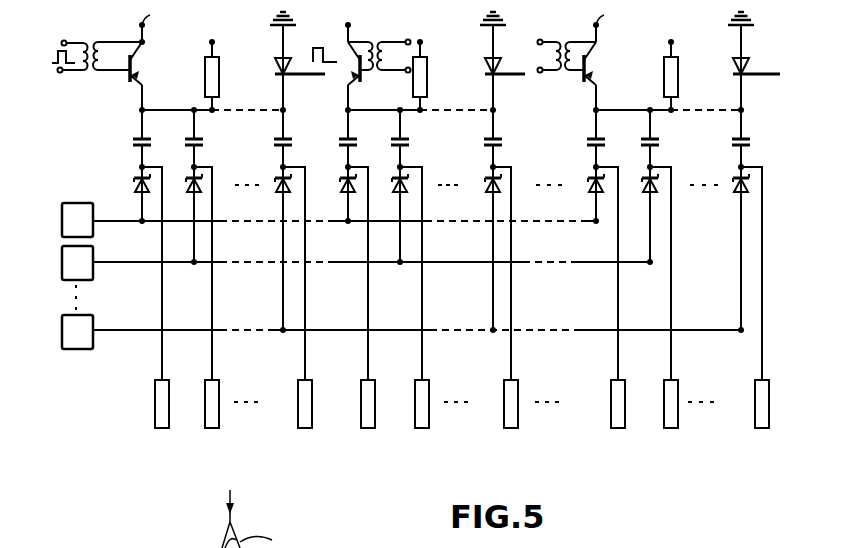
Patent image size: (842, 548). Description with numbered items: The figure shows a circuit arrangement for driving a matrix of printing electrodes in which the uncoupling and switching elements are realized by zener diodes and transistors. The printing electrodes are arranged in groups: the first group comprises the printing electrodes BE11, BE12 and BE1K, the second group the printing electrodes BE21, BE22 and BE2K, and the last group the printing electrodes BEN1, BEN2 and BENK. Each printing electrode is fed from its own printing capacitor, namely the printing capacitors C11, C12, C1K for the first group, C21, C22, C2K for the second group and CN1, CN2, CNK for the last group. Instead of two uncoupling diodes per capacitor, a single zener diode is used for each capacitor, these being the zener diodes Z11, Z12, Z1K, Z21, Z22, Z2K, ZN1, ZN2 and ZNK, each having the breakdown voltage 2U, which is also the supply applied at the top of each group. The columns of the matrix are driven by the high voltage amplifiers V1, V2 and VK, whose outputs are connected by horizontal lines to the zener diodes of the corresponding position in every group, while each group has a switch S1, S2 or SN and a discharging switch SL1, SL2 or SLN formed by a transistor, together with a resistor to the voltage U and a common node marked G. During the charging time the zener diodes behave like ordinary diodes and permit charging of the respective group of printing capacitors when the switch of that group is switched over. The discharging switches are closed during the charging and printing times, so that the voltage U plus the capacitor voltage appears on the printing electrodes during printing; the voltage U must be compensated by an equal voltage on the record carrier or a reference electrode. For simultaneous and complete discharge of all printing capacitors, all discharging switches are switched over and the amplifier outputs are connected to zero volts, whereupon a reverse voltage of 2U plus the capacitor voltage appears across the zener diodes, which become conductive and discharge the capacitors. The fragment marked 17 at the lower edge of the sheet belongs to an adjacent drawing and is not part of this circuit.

The breakdown voltage 2U is at (383, 19).
The discharging switch SL1 is at (137, 65).
The discharging switch SL2 is at (355, 55).
The discharging switch SLN is at (590, 65).
The voltage U is at (677, 33).
The common line G is at (609, 107).
The switch S1 is at (306, 55).
The switch S2 is at (505, 55).
The switch SN is at (756, 55).
The printing capacitor C11 is at (137, 139).
The printing capacitor C12 is at (189, 139).
The printing capacitor C1K is at (278, 139).
The printing capacitor C21 is at (343, 139).
The printing capacitor C22 is at (395, 139).
The printing capacitor C2K is at (488, 139).
The printing capacitor CN1 is at (591, 139).
The printing capacitor CN2 is at (645, 139).
The printing capacitor CNK is at (736, 139).
The zener diode Z11 is at (138, 184).
The zener diode Z12 is at (190, 184).
The zener diode Z1K is at (279, 184).
The zener diode Z21 is at (344, 184).
The zener diode Z22 is at (396, 184).
The zener diode Z2K is at (489, 184).
The zener diode ZN1 is at (592, 184).
The zener diode ZN2 is at (646, 184).
The zener diode ZNK is at (737, 184).
The high voltage amplifier V1 is at (77, 220).
The high voltage amplifier V2 is at (77, 263).
The high voltage amplifier VK is at (77, 332).
The printing electrode BE11 is at (165, 422).
The printing electrode BE12 is at (215, 422).
The printing electrode BE1K is at (308, 422).
The printing electrode BE21 is at (371, 422).
The printing electrode BE22 is at (425, 422).
The printing electrode BE2K is at (514, 422).
The printing electrode BEN1 is at (621, 422).
The printing electrode BEN2 is at (674, 422).
The printing electrode BENK is at (765, 422).
The element 17 (fragment of adjacent figure) 17 is at (256, 519).